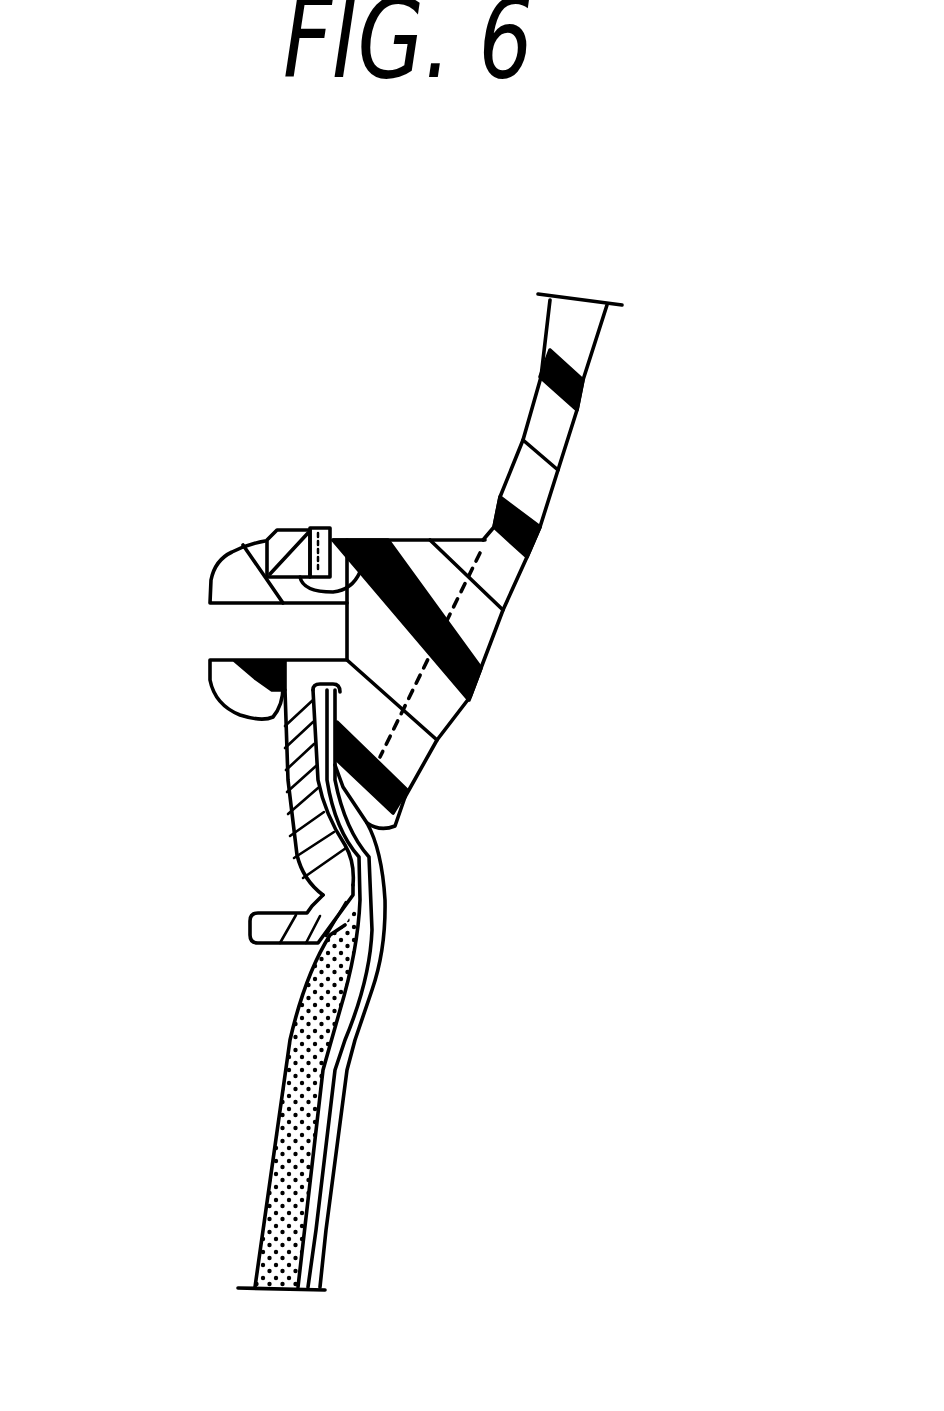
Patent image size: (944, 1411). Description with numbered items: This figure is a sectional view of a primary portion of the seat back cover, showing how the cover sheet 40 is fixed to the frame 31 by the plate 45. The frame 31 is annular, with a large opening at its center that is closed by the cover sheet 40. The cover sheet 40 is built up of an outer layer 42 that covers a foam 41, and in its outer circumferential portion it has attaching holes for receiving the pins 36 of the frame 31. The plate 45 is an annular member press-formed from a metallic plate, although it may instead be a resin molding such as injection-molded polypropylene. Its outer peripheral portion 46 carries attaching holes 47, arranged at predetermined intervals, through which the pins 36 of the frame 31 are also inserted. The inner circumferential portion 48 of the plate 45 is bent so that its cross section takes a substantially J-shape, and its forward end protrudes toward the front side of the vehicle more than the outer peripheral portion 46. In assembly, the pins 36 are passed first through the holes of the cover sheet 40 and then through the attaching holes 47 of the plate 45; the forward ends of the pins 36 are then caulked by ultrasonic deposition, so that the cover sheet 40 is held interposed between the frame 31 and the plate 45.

The frame 31 is at (580, 423).
The pins 36 is at (210, 582).
The cover sheet 40 is at (328, 1213).
The foam 41 is at (270, 1135).
The outer layer 42 is at (345, 1103).
The plate 45 is at (282, 778).
The outer peripheral portion 46 is at (297, 528).
The attaching holes 47 is at (383, 577).
The inner circumferential portion 48 is at (250, 926).